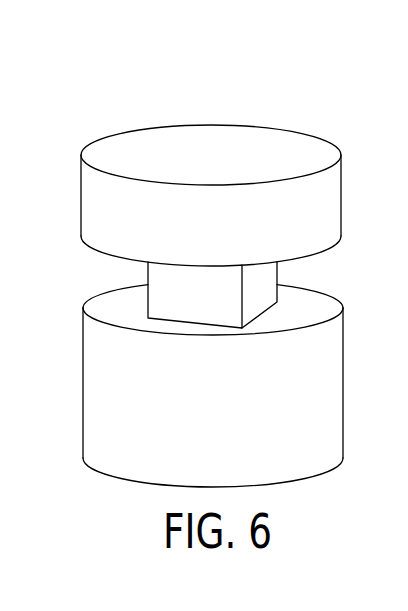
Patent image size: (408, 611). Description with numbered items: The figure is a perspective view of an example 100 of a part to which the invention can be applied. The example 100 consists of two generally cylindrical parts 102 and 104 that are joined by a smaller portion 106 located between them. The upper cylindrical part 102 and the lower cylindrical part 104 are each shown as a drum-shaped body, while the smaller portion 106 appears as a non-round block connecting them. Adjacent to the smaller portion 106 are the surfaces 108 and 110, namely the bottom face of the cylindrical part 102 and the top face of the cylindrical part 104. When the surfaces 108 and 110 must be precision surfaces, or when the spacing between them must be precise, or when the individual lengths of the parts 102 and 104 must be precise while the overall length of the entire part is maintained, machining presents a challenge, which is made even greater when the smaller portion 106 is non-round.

The example part 100 is at (148, 112).
The cylindrical part 102 is at (81, 193).
The cylindrical part 104 is at (82, 377).
The smaller portion 106 is at (272, 273).
The surface 108 is at (103, 302).
The surface 110 is at (101, 253).